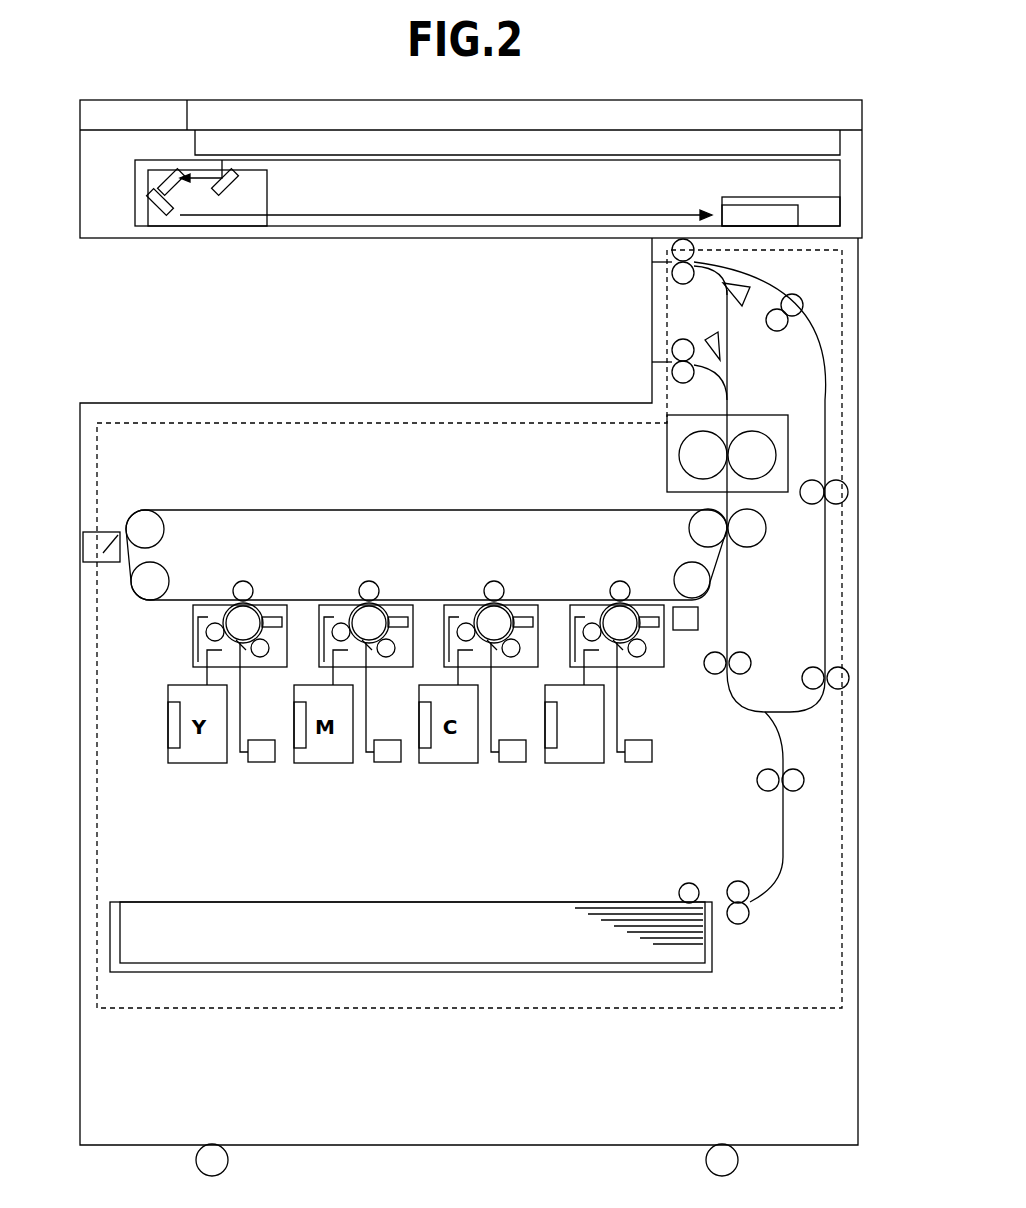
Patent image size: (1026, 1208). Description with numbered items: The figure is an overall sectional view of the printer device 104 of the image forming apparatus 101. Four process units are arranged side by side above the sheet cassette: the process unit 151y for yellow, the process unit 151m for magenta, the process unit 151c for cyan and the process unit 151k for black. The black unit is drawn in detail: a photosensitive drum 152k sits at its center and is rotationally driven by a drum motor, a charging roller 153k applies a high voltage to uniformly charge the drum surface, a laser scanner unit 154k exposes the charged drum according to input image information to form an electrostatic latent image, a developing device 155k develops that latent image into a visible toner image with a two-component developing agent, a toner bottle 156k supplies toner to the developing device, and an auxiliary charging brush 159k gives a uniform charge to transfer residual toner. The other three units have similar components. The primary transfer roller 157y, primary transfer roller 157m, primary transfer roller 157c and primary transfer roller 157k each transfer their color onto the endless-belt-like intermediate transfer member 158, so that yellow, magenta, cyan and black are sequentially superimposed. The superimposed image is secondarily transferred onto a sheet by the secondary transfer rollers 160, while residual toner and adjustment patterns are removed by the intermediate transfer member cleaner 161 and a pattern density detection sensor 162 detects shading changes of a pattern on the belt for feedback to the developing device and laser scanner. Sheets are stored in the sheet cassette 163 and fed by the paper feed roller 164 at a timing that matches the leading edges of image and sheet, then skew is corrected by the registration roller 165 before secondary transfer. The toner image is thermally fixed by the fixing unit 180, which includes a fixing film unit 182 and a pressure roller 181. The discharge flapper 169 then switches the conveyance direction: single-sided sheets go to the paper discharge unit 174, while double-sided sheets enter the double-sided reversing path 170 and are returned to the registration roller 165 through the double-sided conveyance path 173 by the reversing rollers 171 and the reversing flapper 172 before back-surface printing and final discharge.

The image forming apparatus 101 is at (136, 370).
The printer device 104 is at (514, 1022).
The process unit 151y is at (226, 605).
The process unit 151m is at (352, 605).
The process unit 151c is at (478, 605).
The process unit 151k is at (600, 605).
The photosensitive drum 152k is at (646, 652).
The charging roller 153k is at (626, 652).
The laser scanner unit 154k is at (640, 764).
The developing device 155k is at (583, 630).
The toner bottle 156k is at (570, 764).
The primary transfer roller 157y is at (243, 581).
The primary transfer roller 157m is at (369, 581).
The primary transfer roller 157c is at (494, 581).
The primary transfer roller 157k is at (620, 581).
The intermediate transfer member 158 is at (172, 602).
The auxiliary charging brush 159k is at (650, 616).
The secondary transfer rollers 160 is at (767, 528).
The intermediate transfer member cleaner 161 is at (83, 548).
The pattern density detection sensor 162 is at (698, 615).
The sheet cassette 163 is at (248, 963).
The paper feed roller 164 is at (690, 883).
The registration roller 165 is at (752, 663).
The discharge flapper 169 is at (722, 340).
The double-sided reversing path 170 is at (802, 318).
The reversing rollers 171 is at (672, 264).
The reversing flapper 172 is at (750, 285).
The double-sided conveyance path 173 is at (828, 386).
The paper discharge unit 174 is at (672, 362).
The fixing unit 180 is at (667, 455).
The pressure roller 181 is at (778, 455).
The fixing film unit 182 is at (720, 430).